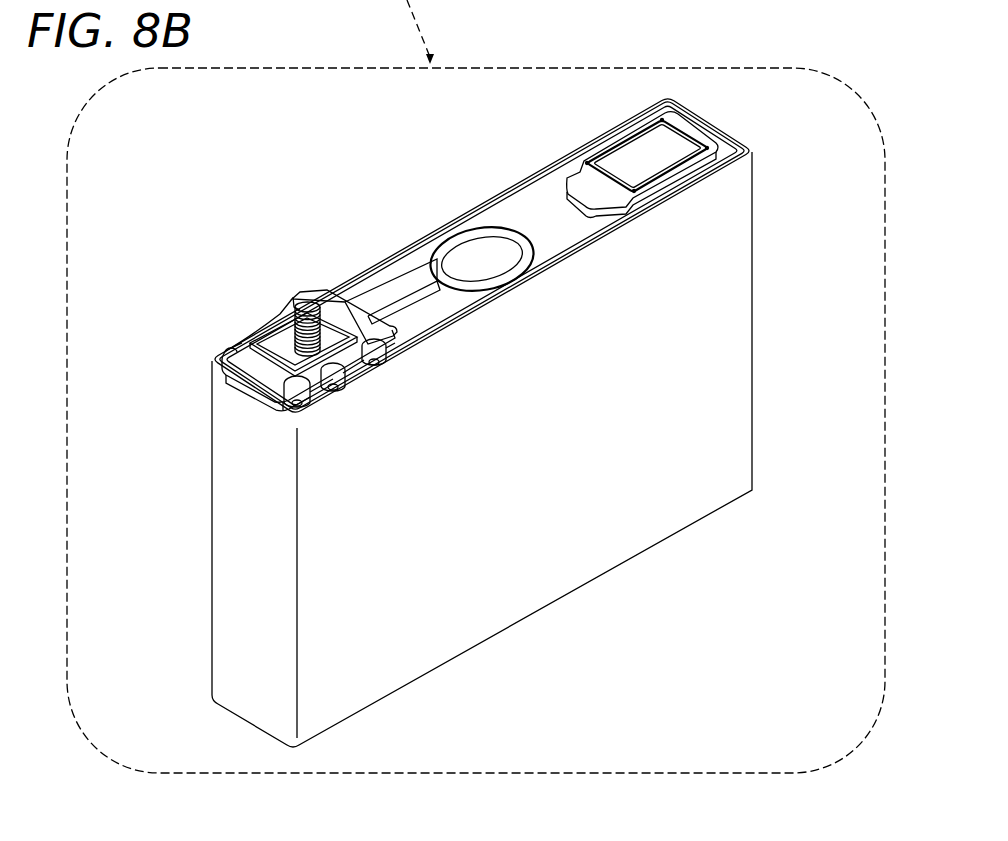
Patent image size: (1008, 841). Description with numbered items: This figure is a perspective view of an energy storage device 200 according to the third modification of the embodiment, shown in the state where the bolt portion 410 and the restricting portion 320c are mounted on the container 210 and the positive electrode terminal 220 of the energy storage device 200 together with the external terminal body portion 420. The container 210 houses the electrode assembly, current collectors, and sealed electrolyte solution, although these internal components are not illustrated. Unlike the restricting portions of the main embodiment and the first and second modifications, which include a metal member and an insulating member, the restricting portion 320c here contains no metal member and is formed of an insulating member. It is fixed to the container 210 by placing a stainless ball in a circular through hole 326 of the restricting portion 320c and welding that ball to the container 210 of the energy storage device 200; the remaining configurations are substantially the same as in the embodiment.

The energy storage device 200 is at (768, 223).
The container 210 is at (510, 210).
The positive electrode terminal 220 is at (388, 318).
The restricting portion 320c is at (358, 366).
The through hole 326 is at (384, 350).
The bolt portion 410 is at (300, 334).
The external terminal body portion 420 is at (288, 333).